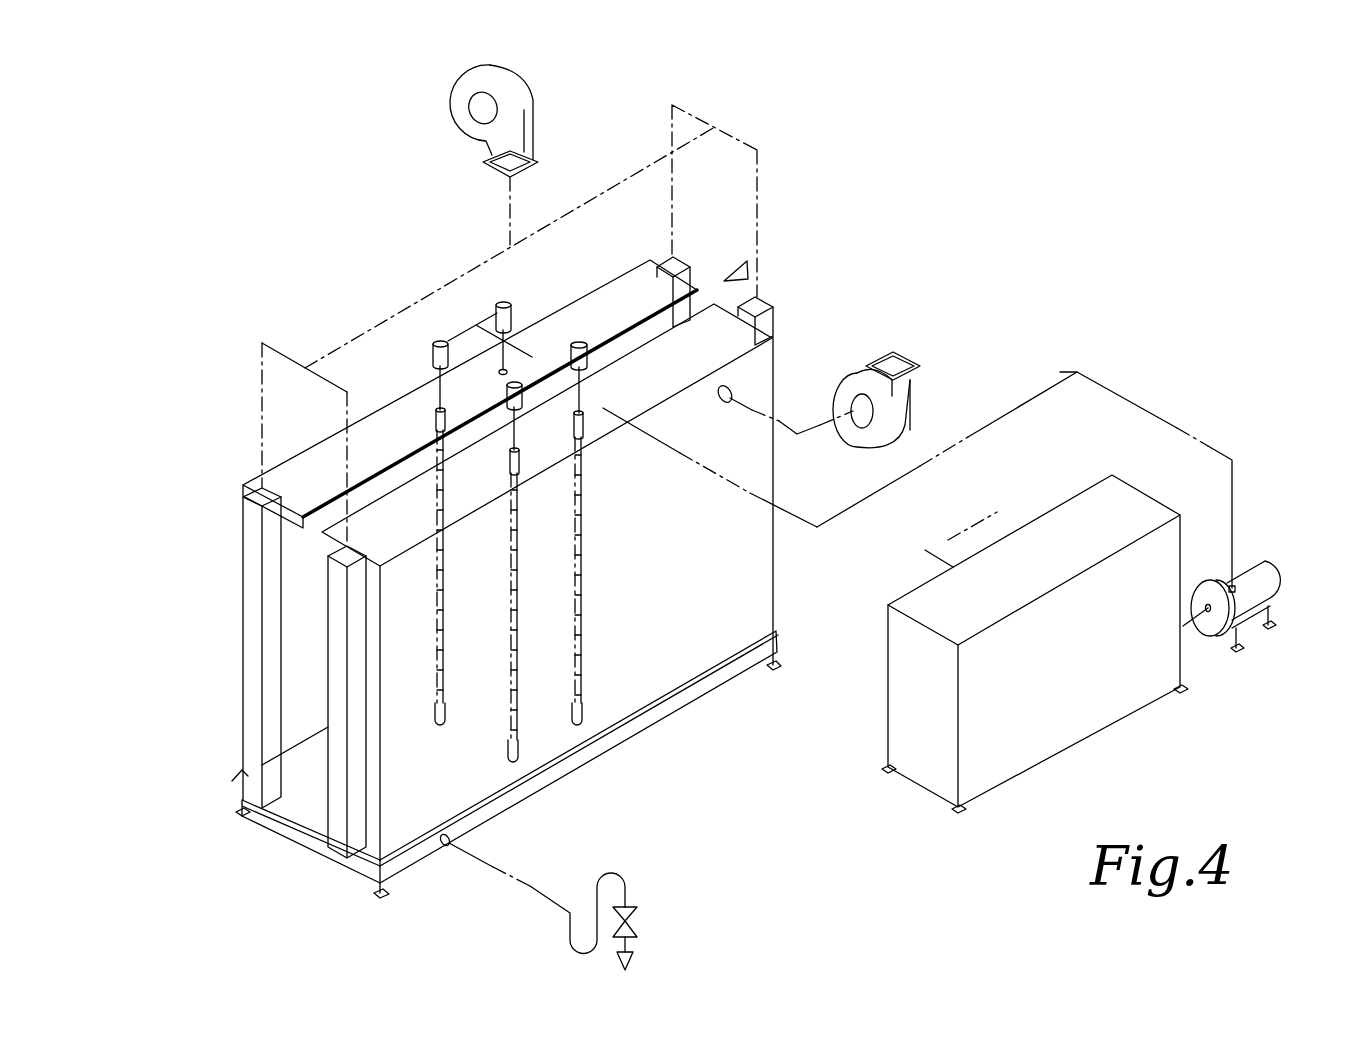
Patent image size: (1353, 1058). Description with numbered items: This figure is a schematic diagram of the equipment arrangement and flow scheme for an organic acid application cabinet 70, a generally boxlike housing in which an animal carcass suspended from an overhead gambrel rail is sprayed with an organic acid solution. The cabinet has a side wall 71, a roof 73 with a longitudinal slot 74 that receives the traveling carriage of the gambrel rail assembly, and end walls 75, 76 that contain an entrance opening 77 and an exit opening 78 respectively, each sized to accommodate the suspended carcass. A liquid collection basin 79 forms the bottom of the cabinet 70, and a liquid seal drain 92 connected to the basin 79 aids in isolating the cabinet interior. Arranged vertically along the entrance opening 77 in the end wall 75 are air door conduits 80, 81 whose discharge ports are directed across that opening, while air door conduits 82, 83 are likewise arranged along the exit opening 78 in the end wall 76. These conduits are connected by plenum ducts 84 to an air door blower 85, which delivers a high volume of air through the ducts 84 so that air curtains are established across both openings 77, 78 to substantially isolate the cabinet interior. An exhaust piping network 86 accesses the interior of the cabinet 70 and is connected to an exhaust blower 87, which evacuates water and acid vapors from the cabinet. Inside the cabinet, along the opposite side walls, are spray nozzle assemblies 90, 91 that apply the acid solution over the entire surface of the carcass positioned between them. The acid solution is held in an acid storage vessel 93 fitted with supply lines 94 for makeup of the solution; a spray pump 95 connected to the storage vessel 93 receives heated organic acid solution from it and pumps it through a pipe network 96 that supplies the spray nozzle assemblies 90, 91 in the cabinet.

The acid application cabinet 70 is at (550, 288).
The side wall 71 is at (742, 582).
The roof 73 is at (608, 305).
The longitudinal slot 74 is at (403, 484).
The end wall 75 is at (727, 303).
The end wall 76 is at (373, 820).
The entrance opening 77 is at (750, 266).
The exit opening 78 is at (321, 678).
The liquid collection basin 79 is at (667, 713).
The air door conduit 80 is at (687, 281).
The air door conduit 81 is at (773, 318).
The air door conduit 82 is at (257, 553).
The air door conduit 83 is at (342, 627).
The plenum ducts 84 is at (672, 156).
The air door blower 85 is at (466, 112).
The exhaust piping network 86 is at (793, 433).
The exhaust blower 87 is at (900, 408).
The spray nozzle assembly 90 is at (512, 707).
The spray nozzle assembly 91 is at (433, 420).
The liquid seal drain 92 is at (628, 889).
The acid storage vessel 93 is at (1237, 692).
The supply lines 94 is at (950, 535).
The spray pump 95 is at (1257, 587).
The pipe network 96 is at (1060, 372).